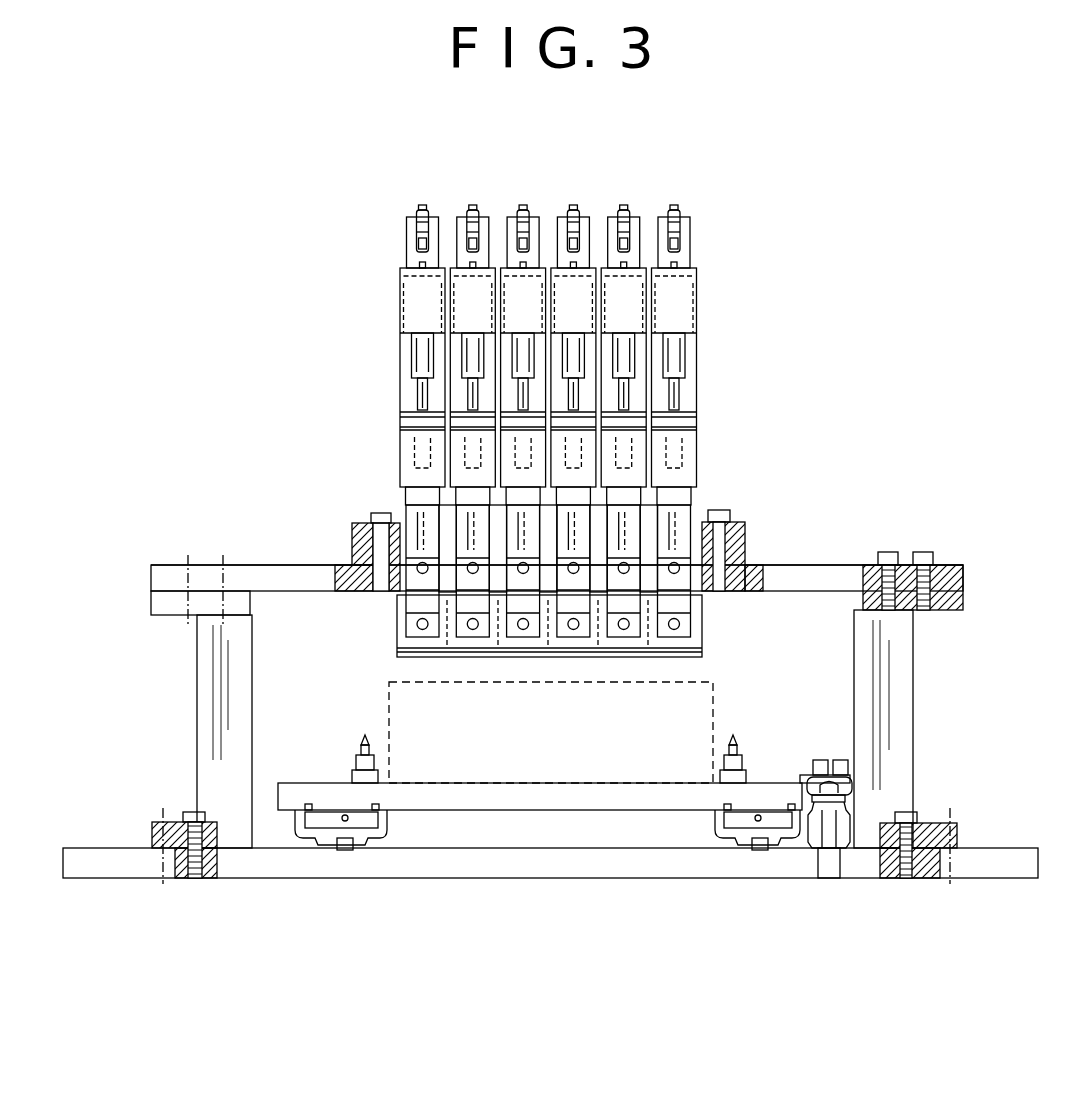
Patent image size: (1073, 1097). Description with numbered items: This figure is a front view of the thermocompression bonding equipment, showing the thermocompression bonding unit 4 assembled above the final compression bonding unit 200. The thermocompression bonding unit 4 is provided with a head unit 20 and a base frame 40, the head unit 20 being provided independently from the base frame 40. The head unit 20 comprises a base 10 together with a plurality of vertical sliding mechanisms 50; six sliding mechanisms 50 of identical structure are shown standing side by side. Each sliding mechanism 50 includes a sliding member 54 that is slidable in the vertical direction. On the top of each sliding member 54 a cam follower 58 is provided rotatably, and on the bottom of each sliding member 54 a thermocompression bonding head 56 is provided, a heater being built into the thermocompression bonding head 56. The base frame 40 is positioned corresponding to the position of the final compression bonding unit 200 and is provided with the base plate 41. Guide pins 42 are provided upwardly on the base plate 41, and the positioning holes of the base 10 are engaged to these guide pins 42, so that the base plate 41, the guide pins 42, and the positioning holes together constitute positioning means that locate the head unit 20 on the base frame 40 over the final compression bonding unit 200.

The thermocompression bonding unit 4 is at (850, 356).
The base 10 is at (471, 507).
The head unit 20 is at (506, 428).
The base frame 40 is at (932, 701).
The base plate 41 is at (812, 572).
The guide pins 42 is at (358, 594).
The sliding mechanisms 50 is at (506, 370).
The sliding member 54 is at (512, 296).
The thermocompression bonding head 56 is at (418, 660).
The cam follower 58 is at (420, 207).
The final compression bonding unit 200 is at (243, 743).